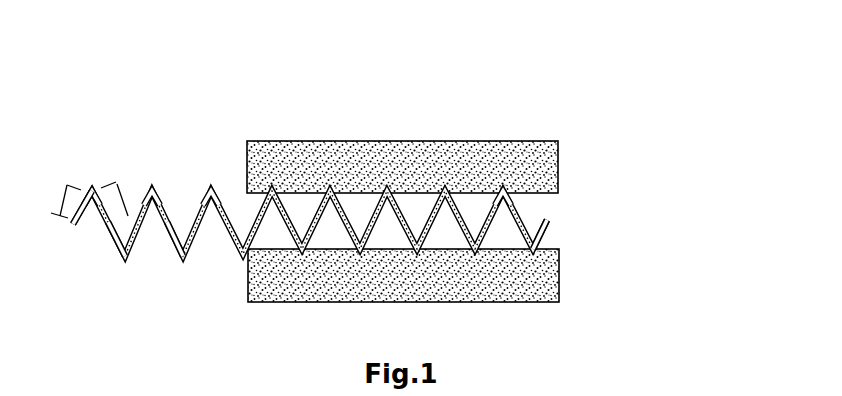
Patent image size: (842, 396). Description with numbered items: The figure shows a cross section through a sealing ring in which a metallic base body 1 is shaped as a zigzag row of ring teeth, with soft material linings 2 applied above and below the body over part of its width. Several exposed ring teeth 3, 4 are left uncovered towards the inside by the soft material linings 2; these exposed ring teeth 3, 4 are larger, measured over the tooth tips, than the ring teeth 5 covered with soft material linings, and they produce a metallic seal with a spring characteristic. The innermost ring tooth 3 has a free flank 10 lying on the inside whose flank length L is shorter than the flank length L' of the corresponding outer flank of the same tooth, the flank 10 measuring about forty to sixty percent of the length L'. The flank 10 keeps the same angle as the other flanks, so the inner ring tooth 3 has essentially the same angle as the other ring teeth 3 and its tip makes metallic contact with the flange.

The metallic base body 1 is at (221, 226).
The soft material linings 2 is at (411, 165).
The exposed ring teeth 3 is at (90, 188).
The exposed ring teeth 4 is at (124, 241).
The ring teeth covered with soft material linings 5 is at (502, 190).
The flank lying on the inside 10 is at (87, 220).
The flank length L is at (62, 200).
The flank length L' is at (111, 175).